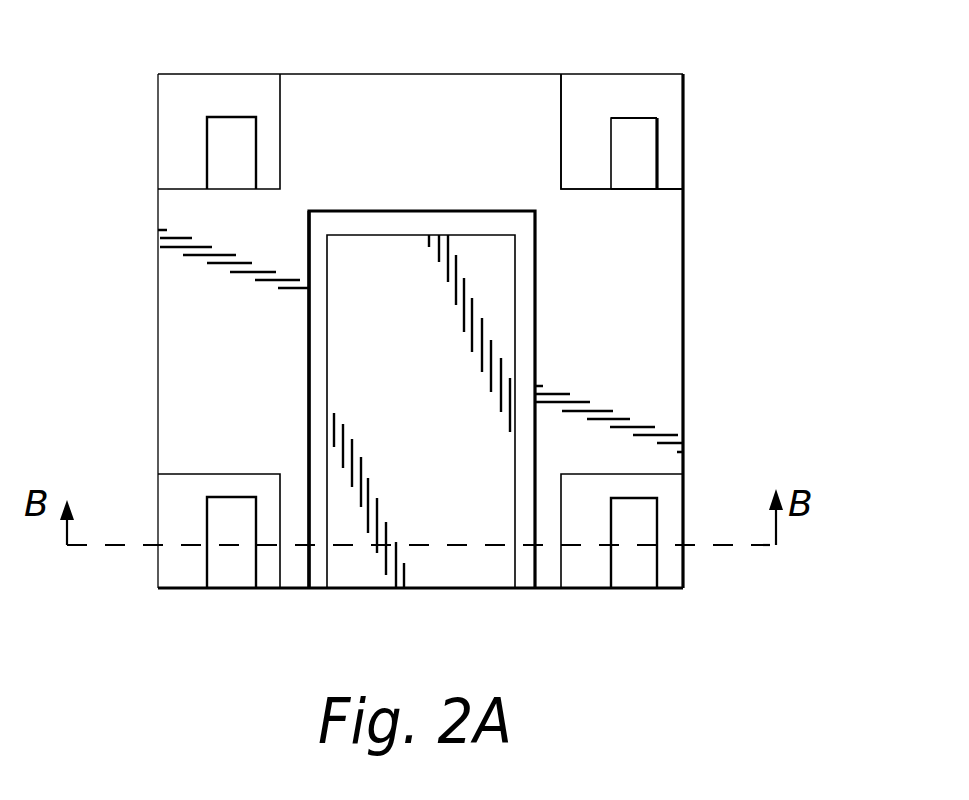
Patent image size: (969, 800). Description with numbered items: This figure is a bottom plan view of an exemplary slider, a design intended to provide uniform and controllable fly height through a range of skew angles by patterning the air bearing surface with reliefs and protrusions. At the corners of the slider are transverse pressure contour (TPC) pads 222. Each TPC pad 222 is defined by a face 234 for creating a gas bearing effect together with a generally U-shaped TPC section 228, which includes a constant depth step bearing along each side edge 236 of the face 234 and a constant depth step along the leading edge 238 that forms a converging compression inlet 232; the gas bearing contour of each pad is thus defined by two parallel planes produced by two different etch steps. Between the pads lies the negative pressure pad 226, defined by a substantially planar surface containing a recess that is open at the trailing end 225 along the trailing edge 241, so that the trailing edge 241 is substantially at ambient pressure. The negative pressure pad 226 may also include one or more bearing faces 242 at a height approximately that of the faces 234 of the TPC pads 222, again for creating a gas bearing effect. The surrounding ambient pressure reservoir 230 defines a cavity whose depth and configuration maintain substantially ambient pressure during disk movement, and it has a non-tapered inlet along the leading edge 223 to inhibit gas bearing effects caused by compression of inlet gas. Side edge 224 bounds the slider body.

The transverse pressure contour pad 222 is at (145, 148).
The leading edge 223 is at (440, 73).
The side edge 224 is at (683, 298).
The trailing end 225 is at (497, 590).
The negative pressure pad 226 is at (530, 199).
The TPC section 228 is at (685, 117).
The ambient pressure reservoir 230 is at (170, 398).
The converging compression inlet 232 is at (631, 102).
The face 234 is at (650, 150).
The side edge 236 is at (658, 172).
The leading edge 238 is at (647, 118).
The trailing edge 241 is at (388, 588).
The bearing face 242 is at (320, 578).